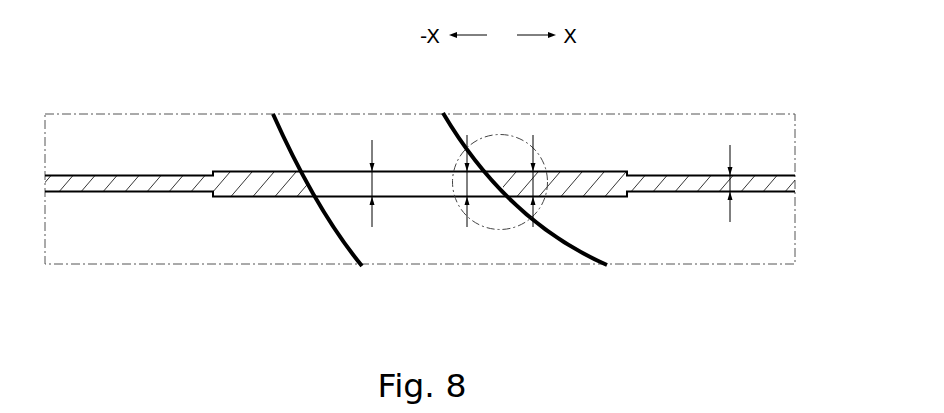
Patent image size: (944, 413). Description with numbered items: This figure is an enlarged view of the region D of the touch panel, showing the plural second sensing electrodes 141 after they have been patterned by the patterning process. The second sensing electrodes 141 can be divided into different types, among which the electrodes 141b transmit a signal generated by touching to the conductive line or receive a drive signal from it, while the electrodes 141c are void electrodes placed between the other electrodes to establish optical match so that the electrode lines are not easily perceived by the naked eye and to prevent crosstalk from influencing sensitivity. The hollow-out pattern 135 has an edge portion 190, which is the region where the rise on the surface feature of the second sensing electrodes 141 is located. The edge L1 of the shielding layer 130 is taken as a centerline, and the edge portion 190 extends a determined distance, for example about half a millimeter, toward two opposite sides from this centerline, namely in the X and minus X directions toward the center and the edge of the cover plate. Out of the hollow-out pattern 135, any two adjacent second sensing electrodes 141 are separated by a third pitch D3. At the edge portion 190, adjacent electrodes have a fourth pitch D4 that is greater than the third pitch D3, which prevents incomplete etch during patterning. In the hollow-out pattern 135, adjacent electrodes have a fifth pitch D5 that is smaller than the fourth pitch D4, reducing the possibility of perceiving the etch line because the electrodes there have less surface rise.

The region D is at (166, 114).
The shielding layer 130 is at (780, 185).
The second sensing electrodes 141 is at (303, 125).
The electrodes 141b is at (780, 235).
The electrodes 141c is at (780, 150).
The hollow-out pattern 135 is at (386, 130).
The edge portion 190 is at (547, 163).
The edge of the shielding layer L1 is at (508, 170).
The third pitch D3 is at (727, 178).
The fourth pitch D4 is at (468, 185).
The fifth pitch D5 is at (371, 180).